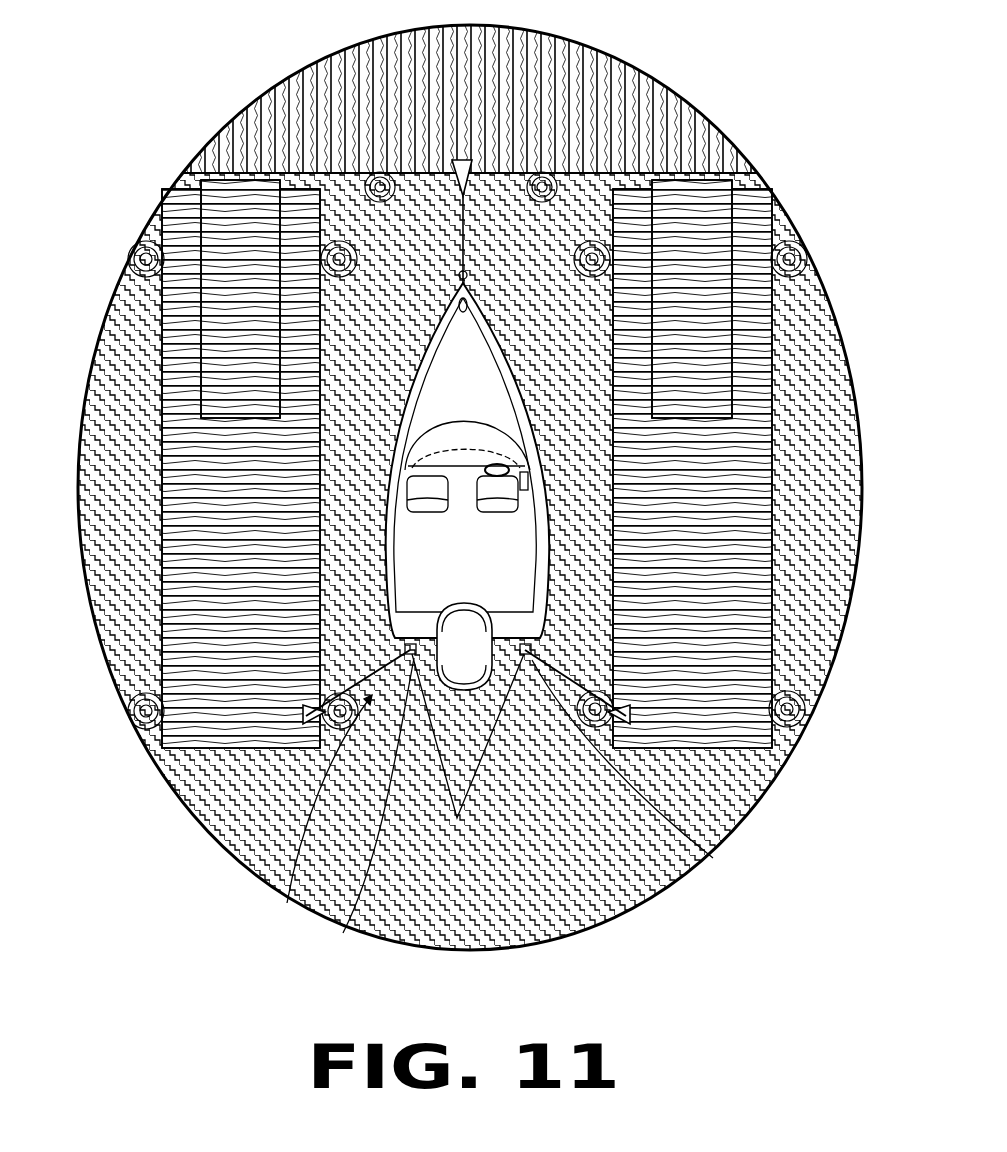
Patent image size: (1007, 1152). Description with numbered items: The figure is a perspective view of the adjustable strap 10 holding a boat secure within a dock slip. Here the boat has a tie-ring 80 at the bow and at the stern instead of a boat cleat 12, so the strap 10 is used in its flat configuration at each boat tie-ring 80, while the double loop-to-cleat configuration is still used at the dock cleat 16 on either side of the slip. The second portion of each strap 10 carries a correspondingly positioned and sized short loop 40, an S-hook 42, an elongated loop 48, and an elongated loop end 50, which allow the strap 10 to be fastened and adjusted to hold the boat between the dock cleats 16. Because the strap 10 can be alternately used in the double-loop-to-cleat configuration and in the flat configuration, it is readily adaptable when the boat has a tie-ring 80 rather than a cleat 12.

The adjustable strap 10 is at (398, 247).
The boat cleat 12 is at (507, 305).
The dock cleat 16 is at (458, 163).
The short loop 40 is at (487, 165).
The S-hook 42 is at (473, 173).
The elongated loop 48 is at (330, 262).
The elongated loop end 50 is at (673, 72).
The tie-ring 80 is at (460, 275).